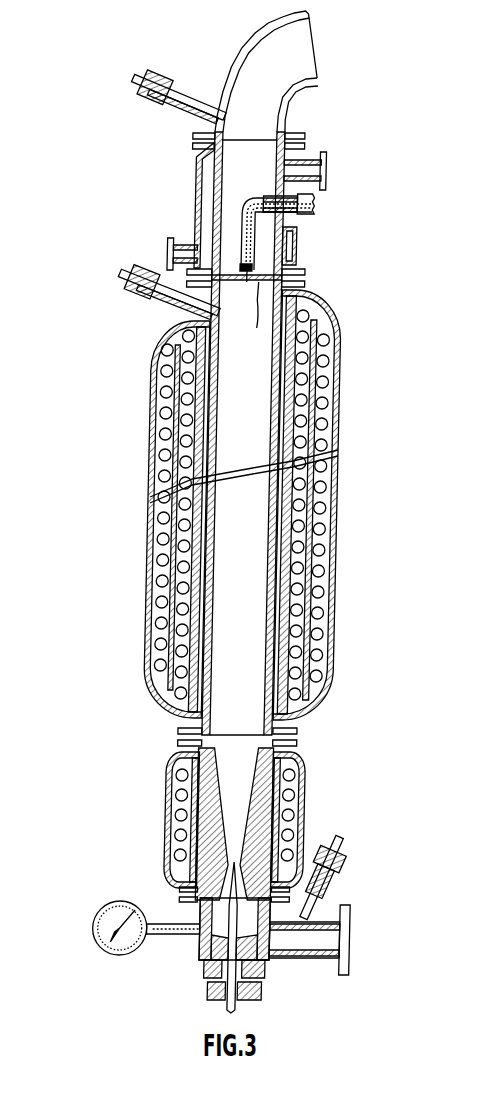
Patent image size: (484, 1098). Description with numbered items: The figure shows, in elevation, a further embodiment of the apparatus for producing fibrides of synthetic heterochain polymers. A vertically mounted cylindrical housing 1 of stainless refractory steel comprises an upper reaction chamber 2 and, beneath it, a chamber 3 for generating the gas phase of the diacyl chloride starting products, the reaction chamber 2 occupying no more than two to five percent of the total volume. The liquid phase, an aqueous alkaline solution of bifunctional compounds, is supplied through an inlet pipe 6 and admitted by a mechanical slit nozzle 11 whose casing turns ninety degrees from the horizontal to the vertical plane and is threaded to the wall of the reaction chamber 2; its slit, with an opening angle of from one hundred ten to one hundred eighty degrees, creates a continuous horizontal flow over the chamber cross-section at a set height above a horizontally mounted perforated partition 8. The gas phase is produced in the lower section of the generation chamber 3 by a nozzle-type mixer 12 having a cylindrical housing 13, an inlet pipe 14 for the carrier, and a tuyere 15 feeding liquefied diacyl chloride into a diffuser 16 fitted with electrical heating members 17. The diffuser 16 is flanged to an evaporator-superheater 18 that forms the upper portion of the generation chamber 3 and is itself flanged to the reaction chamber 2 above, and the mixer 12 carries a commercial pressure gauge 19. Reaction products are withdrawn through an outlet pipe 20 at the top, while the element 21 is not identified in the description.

The cylindrical housing 1 is at (158, 462).
The reaction chamber 2 is at (231, 176).
The chamber for generating the gas phase 3 is at (320, 411).
The inlet pipe 6 is at (306, 196).
The perforated partition 8 is at (247, 282).
The mechanical slit nozzle 11 is at (251, 200).
The nozzle-type mixer 12 is at (232, 955).
The cylindrical housing 13 is at (283, 960).
The inlet pipe 14 is at (362, 942).
The tuyere 15 is at (250, 918).
The diffuser 16 is at (297, 816).
The electrical heating members 17 is at (327, 510).
The evaporator-superheater 18 is at (234, 400).
The pressure gauge 19 is at (130, 903).
The outlet pipe 20 is at (243, 56).
The tube 21 is at (250, 317).